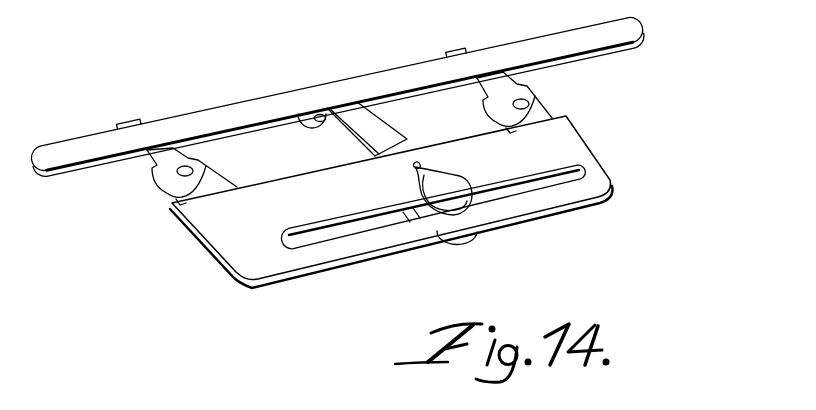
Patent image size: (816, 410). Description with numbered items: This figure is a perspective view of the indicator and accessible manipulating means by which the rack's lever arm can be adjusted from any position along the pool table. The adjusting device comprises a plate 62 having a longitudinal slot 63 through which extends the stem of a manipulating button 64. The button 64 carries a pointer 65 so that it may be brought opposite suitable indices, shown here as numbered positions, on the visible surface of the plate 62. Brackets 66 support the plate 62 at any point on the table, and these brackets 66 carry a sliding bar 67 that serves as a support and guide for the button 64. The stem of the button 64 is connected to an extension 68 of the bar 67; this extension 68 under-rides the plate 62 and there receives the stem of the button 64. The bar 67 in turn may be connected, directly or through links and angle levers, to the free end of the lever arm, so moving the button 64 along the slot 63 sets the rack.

The plate 62 is at (564, 135).
The longitudinal slot 63 is at (584, 183).
The manipulating button 64 is at (453, 205).
The pointer 65 is at (425, 167).
The brackets 66 is at (157, 181).
The sliding bar 67 is at (258, 88).
The extension 68 is at (345, 146).